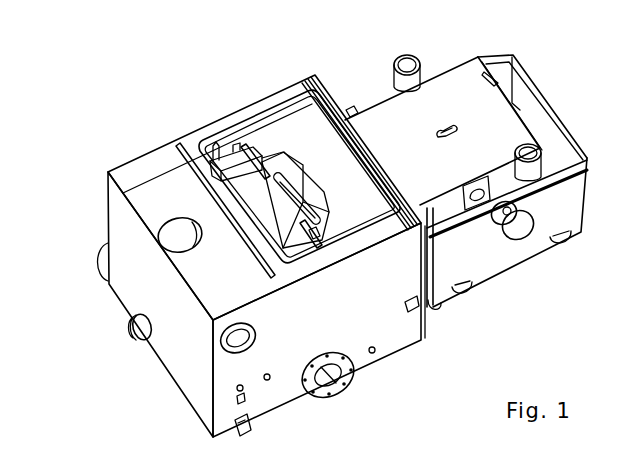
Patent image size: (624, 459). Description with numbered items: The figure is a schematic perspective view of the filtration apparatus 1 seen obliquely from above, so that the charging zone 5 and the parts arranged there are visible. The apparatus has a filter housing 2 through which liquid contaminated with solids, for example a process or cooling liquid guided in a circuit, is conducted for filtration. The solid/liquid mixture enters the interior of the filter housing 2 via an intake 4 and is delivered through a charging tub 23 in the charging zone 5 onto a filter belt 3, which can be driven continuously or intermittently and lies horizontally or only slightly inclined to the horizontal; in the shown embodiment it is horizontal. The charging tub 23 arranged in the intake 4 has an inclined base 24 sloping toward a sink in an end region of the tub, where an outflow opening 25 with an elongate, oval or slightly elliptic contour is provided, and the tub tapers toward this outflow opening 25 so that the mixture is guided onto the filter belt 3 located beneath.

The filtration apparatus 1 is at (148, 118).
The filter housing 2 is at (124, 173).
The filter belt 3 is at (331, 150).
The intake 4 is at (226, 142).
The charging zone 5 is at (277, 140).
The charging tub 23 is at (258, 223).
The inclined base 24 is at (250, 200).
The outflow opening 25 is at (318, 226).